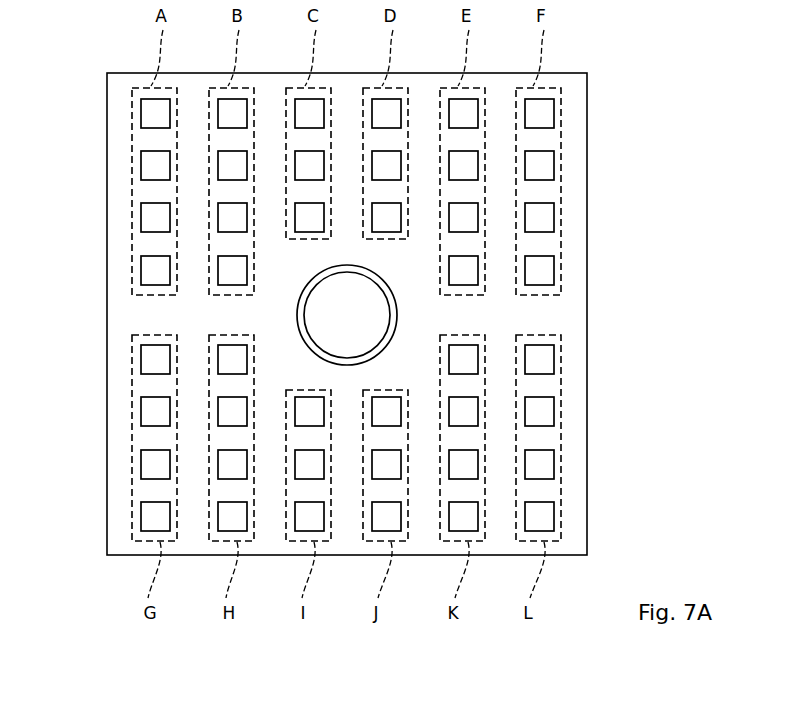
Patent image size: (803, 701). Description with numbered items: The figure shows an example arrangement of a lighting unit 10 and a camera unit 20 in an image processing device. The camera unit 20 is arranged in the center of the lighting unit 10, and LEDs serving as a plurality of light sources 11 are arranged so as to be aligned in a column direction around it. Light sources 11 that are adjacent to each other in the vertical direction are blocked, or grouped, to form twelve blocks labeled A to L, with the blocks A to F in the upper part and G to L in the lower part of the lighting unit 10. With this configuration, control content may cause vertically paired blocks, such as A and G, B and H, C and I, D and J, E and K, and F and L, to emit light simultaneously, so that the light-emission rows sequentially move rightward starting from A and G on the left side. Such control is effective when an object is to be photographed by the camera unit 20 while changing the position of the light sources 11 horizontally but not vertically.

The lighting unit 10 is at (587, 107).
The light sources 11 is at (151, 269).
The camera unit 20 is at (365, 311).